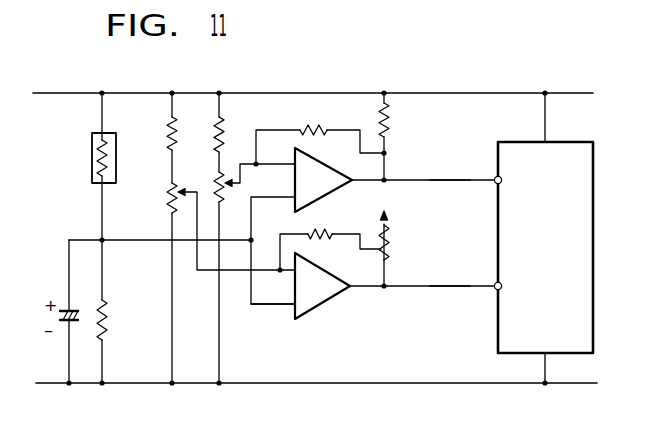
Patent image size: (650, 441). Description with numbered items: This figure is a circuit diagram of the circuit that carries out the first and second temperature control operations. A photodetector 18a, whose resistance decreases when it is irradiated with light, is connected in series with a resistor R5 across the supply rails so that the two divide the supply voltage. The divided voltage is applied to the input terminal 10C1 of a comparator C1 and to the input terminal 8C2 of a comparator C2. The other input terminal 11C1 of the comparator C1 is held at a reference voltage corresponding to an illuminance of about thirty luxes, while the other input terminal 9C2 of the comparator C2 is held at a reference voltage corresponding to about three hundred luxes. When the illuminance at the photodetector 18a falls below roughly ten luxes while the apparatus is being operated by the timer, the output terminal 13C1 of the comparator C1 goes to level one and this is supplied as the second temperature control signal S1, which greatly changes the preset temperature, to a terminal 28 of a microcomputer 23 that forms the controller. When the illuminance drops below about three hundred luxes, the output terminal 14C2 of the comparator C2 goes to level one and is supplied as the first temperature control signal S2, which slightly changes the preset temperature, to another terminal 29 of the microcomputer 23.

The photodetector 18a is at (92, 160).
The resistor R5 is at (121, 311).
The comparator C1 is at (349, 166).
The comparator C2 is at (356, 270).
The input terminal of comparator C1 10C1 is at (262, 182).
The input terminal of comparator C1 11C1 is at (320, 144).
The output terminal of comparator C1 13C1 is at (423, 196).
The input terminal of comparator C2 9C2 is at (319, 265).
The input terminal of comparator C2 8C2 is at (273, 321).
The output terminal of comparator C2 14C2 is at (422, 302).
The microcomputer 23 is at (575, 142).
The terminal of microcomputer 28 is at (494, 179).
The terminal of microcomputer 29 is at (494, 285).
The second temperature control signal S1 is at (440, 183).
The first temperature control signal S2 is at (435, 290).